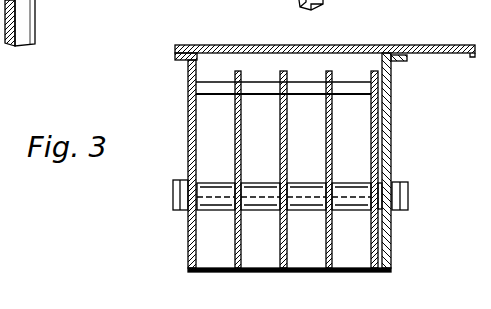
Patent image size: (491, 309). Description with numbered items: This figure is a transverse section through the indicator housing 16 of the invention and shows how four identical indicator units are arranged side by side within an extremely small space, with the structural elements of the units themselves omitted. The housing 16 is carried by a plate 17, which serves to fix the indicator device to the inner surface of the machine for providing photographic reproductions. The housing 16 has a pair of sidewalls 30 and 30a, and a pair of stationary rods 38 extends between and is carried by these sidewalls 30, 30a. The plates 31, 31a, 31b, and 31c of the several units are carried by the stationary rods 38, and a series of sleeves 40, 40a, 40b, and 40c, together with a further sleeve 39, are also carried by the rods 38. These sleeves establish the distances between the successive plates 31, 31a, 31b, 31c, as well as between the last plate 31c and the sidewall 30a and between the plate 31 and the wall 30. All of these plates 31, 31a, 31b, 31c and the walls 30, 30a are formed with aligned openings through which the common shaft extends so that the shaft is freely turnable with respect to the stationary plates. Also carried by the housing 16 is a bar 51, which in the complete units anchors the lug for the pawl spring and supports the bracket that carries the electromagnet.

The housing 16 is at (212, 107).
The plate 17 is at (363, 50).
The sidewall 30 is at (391, 78).
The sidewall 30a is at (188, 153).
The plate 31 is at (378, 125).
The plate 31a is at (326, 252).
The plate 31b is at (280, 250).
The plate 31c is at (235, 250).
The stationary rods 38 is at (372, 178).
The sleeve 39 is at (382, 210).
The sleeve 40 is at (352, 210).
The sleeve 40a is at (306, 210).
The sleeve 40b is at (259, 210).
The sleeve 40c is at (211, 210).
The bar 51 is at (217, 87).